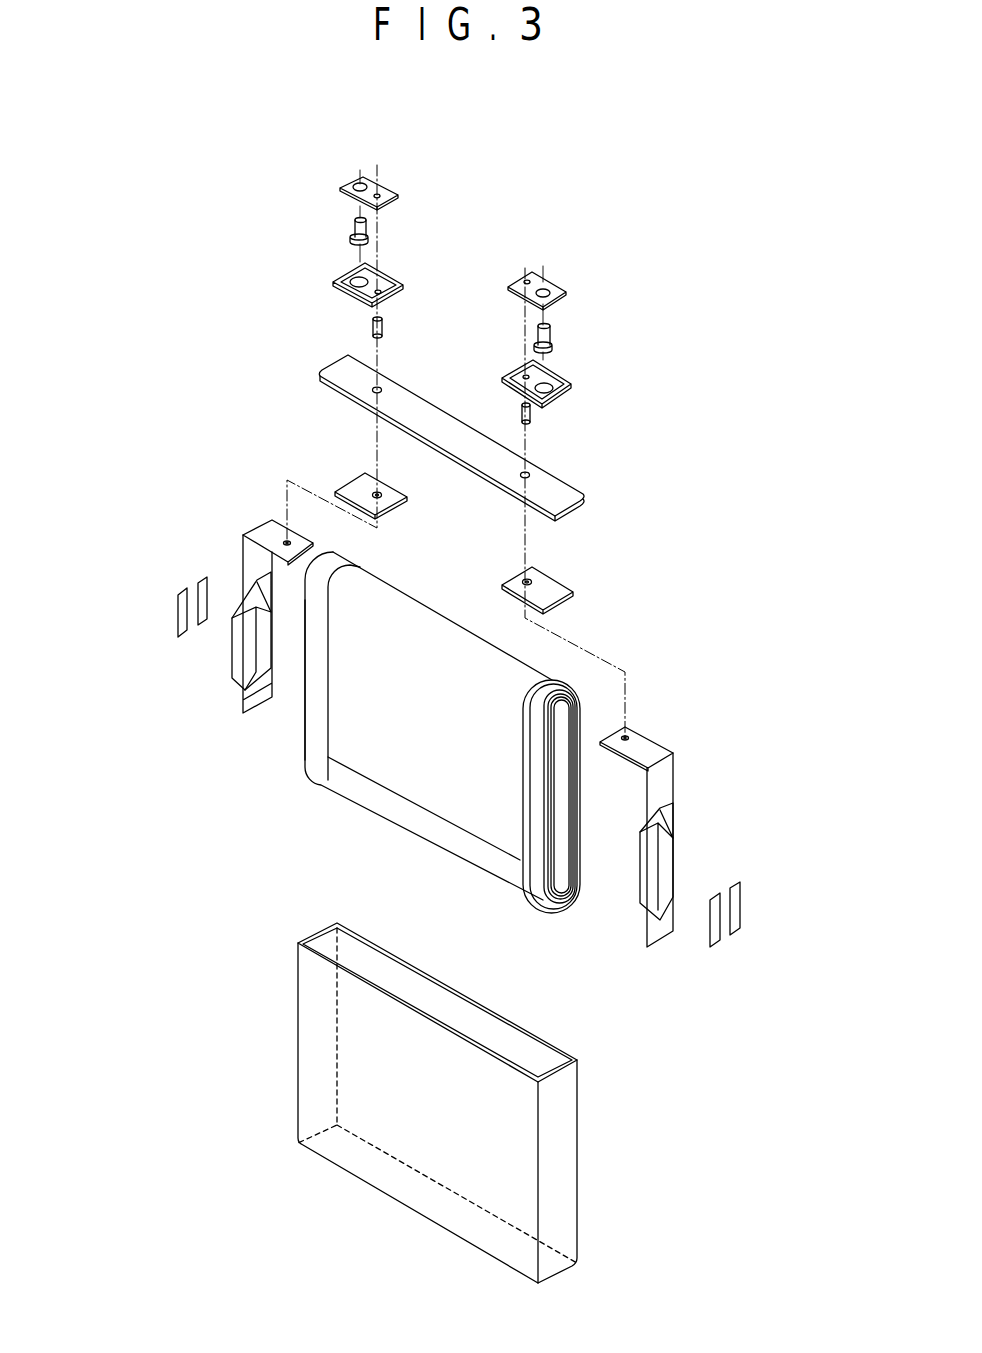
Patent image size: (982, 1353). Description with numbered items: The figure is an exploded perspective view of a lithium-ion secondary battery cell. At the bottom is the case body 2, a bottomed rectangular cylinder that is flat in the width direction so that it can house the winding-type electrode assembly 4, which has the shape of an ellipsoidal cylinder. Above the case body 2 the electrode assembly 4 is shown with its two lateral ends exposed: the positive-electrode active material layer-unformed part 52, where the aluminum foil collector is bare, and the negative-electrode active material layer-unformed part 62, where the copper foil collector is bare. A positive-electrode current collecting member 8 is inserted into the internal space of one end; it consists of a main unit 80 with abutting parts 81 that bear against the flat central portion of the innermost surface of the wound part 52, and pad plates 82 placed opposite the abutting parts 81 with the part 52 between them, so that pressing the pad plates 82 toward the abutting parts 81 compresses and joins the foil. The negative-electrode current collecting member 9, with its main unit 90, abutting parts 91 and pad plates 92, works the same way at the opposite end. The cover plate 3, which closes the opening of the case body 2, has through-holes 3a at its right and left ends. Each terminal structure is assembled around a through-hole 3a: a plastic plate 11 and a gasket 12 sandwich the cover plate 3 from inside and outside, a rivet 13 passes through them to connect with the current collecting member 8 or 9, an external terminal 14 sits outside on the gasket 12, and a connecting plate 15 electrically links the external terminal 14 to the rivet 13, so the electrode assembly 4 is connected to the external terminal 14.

The case body 2 is at (562, 1140).
The cover plate 3 is at (553, 481).
The through-hole 3a is at (373, 388).
The electrode assembly 4 is at (420, 747).
The positive-electrode active material layer-unformed part 52 is at (538, 873).
The negative-electrode active material layer-unformed part 62 is at (317, 742).
The plastic plate 11 is at (354, 488).
The gasket 12 is at (350, 272).
The rivet 13 is at (372, 329).
The external terminal 14 is at (356, 229).
The connecting plate 15 is at (352, 181).
The positive-electrode current collecting member 8 is at (719, 837).
The main unit 80 is at (662, 782).
The abutting part 81 is at (647, 875).
The pad plate 82 is at (763, 909).
The negative-electrode current collecting member 9 is at (203, 616).
The main unit 90 is at (243, 560).
The abutting part 91 is at (260, 637).
The pad plate 92 is at (198, 591).